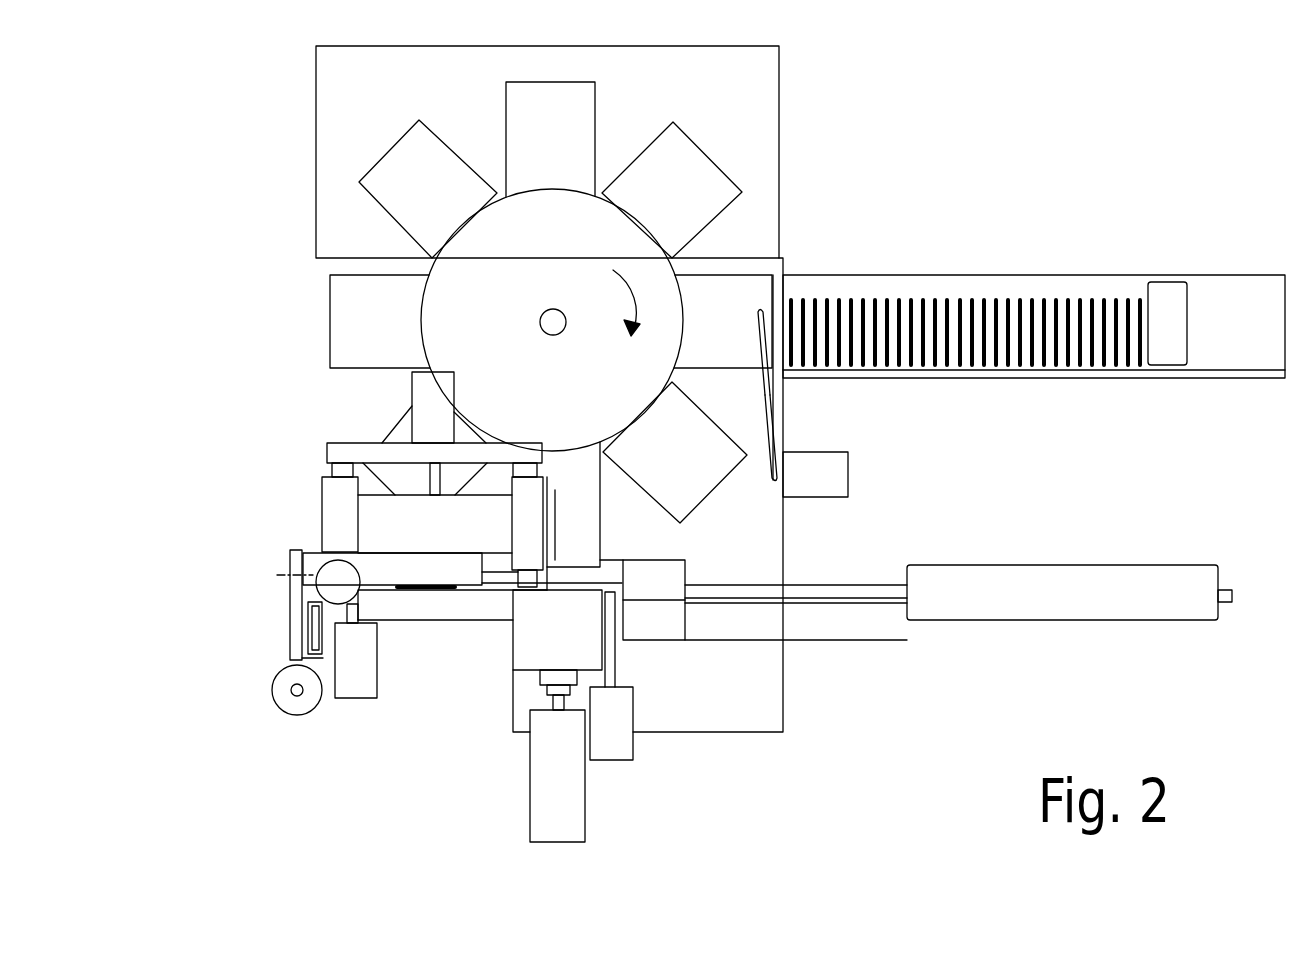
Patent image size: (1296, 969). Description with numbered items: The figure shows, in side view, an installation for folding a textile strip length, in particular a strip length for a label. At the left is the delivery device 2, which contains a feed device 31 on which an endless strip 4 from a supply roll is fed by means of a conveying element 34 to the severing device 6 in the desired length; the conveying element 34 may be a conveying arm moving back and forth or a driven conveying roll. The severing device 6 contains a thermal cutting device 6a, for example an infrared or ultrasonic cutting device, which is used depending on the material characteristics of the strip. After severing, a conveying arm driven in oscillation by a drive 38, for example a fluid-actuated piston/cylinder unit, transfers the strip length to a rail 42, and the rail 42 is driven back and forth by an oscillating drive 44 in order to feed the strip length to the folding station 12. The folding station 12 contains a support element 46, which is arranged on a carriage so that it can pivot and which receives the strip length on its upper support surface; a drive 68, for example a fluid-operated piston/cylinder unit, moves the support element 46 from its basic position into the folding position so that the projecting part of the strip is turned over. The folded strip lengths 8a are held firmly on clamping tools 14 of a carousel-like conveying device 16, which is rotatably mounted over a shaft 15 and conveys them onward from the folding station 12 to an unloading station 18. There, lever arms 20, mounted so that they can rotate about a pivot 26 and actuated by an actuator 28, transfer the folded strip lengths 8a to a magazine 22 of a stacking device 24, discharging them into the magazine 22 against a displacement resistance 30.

The delivery device 2 is at (172, 560).
The endless strip 4 is at (437, 593).
The severing device 6 is at (252, 495).
The thermal cutting device 6a is at (390, 525).
The folded strip lengths 8a is at (902, 300).
The folding station 12 is at (562, 492).
The clamping tools 14 is at (578, 548).
The shaft 15 is at (555, 309).
The carousel-like conveying device 16 is at (506, 310).
The unloading station 18 is at (807, 232).
The lever arms 20 is at (758, 330).
The magazine 22 is at (980, 285).
The stacking device 24 is at (1225, 208).
The pivot 26 is at (776, 425).
The actuator 28 is at (853, 468).
The displacement resistance 30 is at (1168, 342).
The feed device 31 is at (462, 642).
The conveying element 34 is at (407, 572).
The drive 38 is at (276, 688).
The rail 42 is at (565, 592).
The oscillating drive 44 is at (1031, 585).
The support element 46 is at (578, 592).
The drive 68 is at (548, 800).